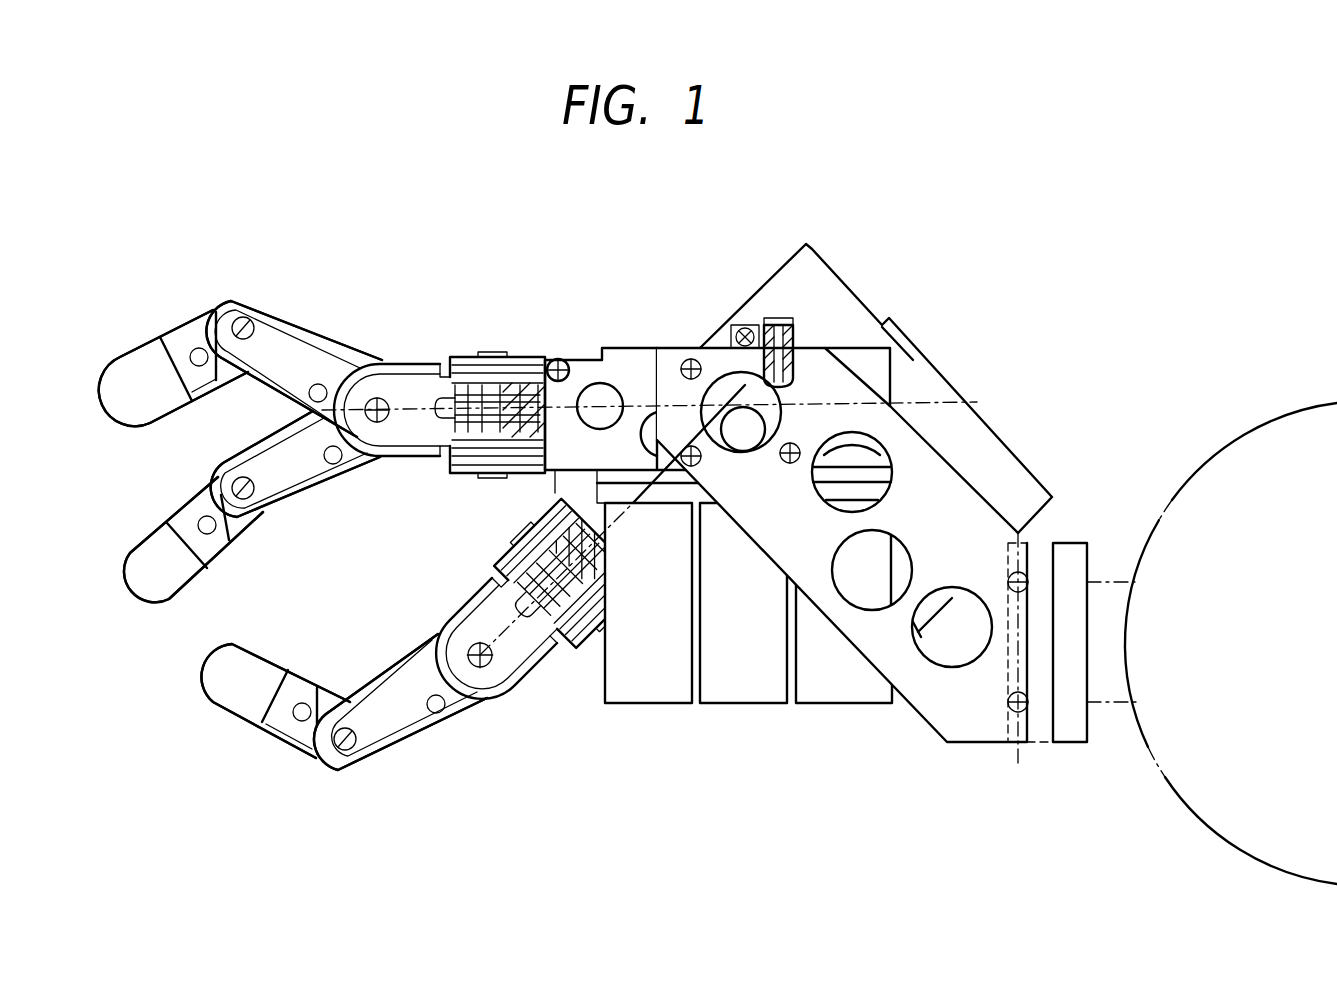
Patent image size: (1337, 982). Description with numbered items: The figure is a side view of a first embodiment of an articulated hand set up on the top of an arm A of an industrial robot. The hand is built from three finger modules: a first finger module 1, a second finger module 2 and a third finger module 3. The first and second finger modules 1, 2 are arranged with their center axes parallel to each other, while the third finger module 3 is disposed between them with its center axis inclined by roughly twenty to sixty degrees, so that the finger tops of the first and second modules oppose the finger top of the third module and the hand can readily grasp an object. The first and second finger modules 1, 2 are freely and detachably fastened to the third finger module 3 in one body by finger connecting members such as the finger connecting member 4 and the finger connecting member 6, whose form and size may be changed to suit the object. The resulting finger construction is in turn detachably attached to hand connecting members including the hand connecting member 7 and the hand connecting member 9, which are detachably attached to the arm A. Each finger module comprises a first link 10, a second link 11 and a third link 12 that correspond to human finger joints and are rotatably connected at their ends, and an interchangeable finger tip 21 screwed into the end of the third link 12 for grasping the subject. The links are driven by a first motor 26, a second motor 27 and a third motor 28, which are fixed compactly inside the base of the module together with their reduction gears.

The first finger module 1 is at (238, 298).
The second finger module 2 is at (218, 476).
The third finger module 3 is at (507, 670).
The finger connecting member 4 is at (764, 325).
The finger connecting member 6 is at (555, 490).
The hand connecting member 7 is at (965, 727).
The hand connecting member 9 is at (1033, 733).
The first link 10 is at (412, 377).
The second link 11 is at (337, 338).
The third link 12 is at (178, 332).
The finger tip 21 is at (118, 415).
The first motor 26 is at (648, 695).
The second motor 27 is at (745, 695).
The third motor 28 is at (835, 695).
The arm A is at (1178, 784).